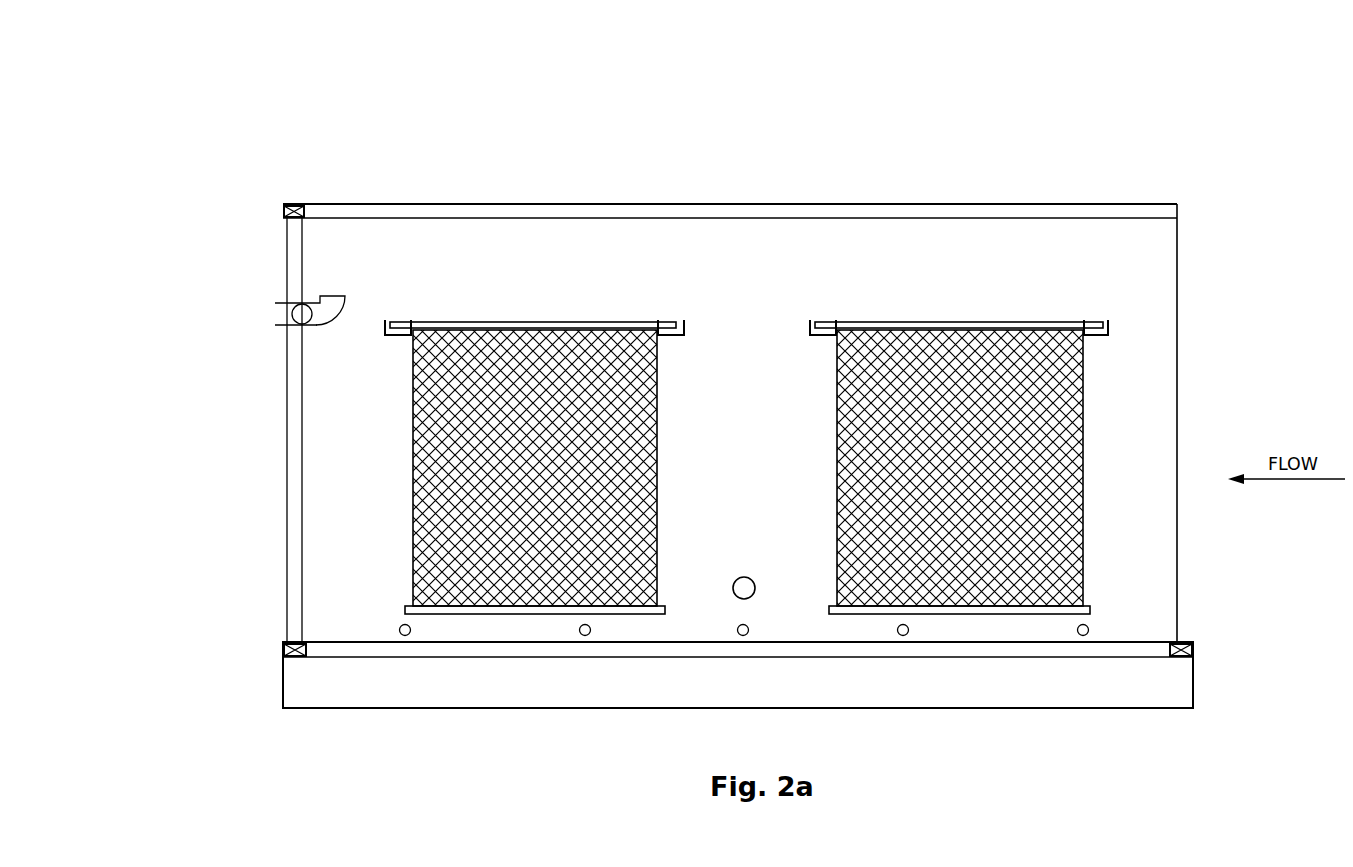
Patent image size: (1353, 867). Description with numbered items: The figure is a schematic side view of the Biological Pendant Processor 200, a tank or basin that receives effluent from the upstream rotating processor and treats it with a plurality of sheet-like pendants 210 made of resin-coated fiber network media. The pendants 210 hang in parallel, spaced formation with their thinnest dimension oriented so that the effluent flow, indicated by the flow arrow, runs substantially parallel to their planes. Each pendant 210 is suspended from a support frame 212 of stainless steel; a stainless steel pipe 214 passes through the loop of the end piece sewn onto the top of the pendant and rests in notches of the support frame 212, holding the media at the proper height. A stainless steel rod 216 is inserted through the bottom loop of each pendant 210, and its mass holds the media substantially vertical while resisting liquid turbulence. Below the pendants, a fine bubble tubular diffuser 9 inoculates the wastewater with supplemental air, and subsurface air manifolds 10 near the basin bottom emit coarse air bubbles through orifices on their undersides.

The Biological Pendant Processor 200 is at (140, 90).
The sheet-like pendant 210 is at (655, 490).
The support frame 212 is at (385, 330).
The pipe 214 is at (545, 322).
The rod 216 is at (663, 607).
The fine bubble tubular diffuser 9 is at (746, 577).
The subsurface air manifold 10 is at (409, 631).